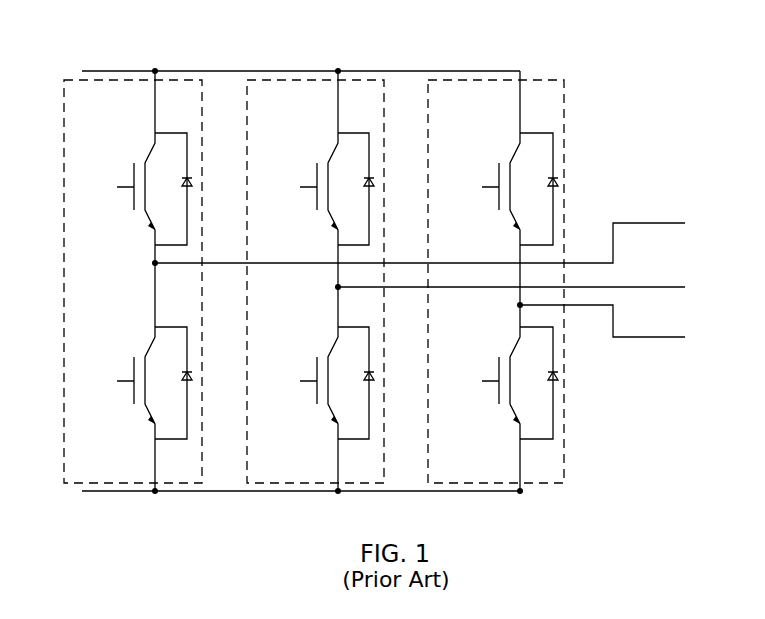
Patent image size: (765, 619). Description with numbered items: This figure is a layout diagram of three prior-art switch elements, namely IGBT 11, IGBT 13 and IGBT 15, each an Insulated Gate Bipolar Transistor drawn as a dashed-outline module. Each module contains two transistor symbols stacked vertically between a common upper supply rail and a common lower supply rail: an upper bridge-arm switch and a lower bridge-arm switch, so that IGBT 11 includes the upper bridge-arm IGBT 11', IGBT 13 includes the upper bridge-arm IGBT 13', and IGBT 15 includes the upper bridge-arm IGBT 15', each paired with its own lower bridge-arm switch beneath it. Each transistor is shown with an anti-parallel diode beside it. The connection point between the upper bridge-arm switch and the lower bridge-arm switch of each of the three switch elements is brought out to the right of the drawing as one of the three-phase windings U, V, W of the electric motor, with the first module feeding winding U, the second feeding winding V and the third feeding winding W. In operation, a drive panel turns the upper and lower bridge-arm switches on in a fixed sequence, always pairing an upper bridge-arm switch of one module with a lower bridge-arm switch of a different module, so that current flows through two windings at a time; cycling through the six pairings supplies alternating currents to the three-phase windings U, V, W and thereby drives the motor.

The IGBT 11 is at (135, 247).
The IGBT 13 is at (319, 247).
The IGBT 15 is at (500, 247).
The upper bridge-arm IGBT 11' is at (128, 185).
The upper bridge-arm IGBT 13' is at (311, 185).
The upper bridge-arm IGBT 15' is at (493, 185).
The three-phase winding U is at (420, 225).
The three-phase winding V is at (511, 274).
The three-phase winding W is at (602, 321).